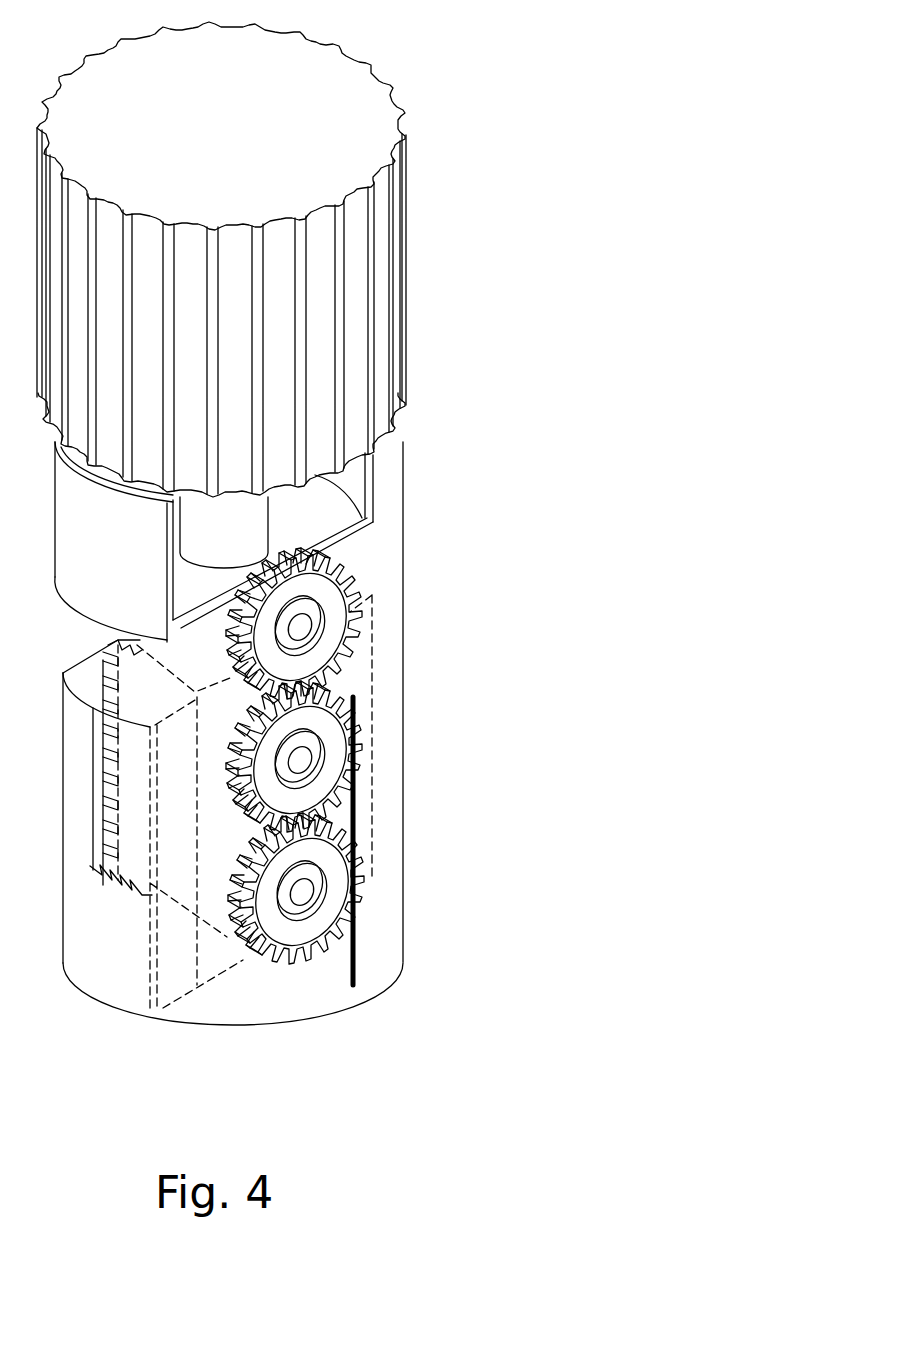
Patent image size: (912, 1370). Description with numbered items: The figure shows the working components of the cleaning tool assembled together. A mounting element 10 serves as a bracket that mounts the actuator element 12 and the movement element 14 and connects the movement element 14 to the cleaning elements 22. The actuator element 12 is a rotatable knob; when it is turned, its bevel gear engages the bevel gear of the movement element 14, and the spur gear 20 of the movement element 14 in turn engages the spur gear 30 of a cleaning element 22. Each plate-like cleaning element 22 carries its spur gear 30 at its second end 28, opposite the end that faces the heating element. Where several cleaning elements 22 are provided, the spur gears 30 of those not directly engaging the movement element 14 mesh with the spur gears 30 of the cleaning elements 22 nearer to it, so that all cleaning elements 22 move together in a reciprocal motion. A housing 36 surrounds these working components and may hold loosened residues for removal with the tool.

The mounting element 10 is at (342, 482).
The actuator element 12 is at (305, 275).
The movement element 14 is at (411, 623).
The spur gear 20 is at (303, 630).
The cleaning element 22 is at (421, 822).
The second end 28 is at (421, 822).
The spur gear 30 is at (313, 762).
The housing 36 is at (270, 992).